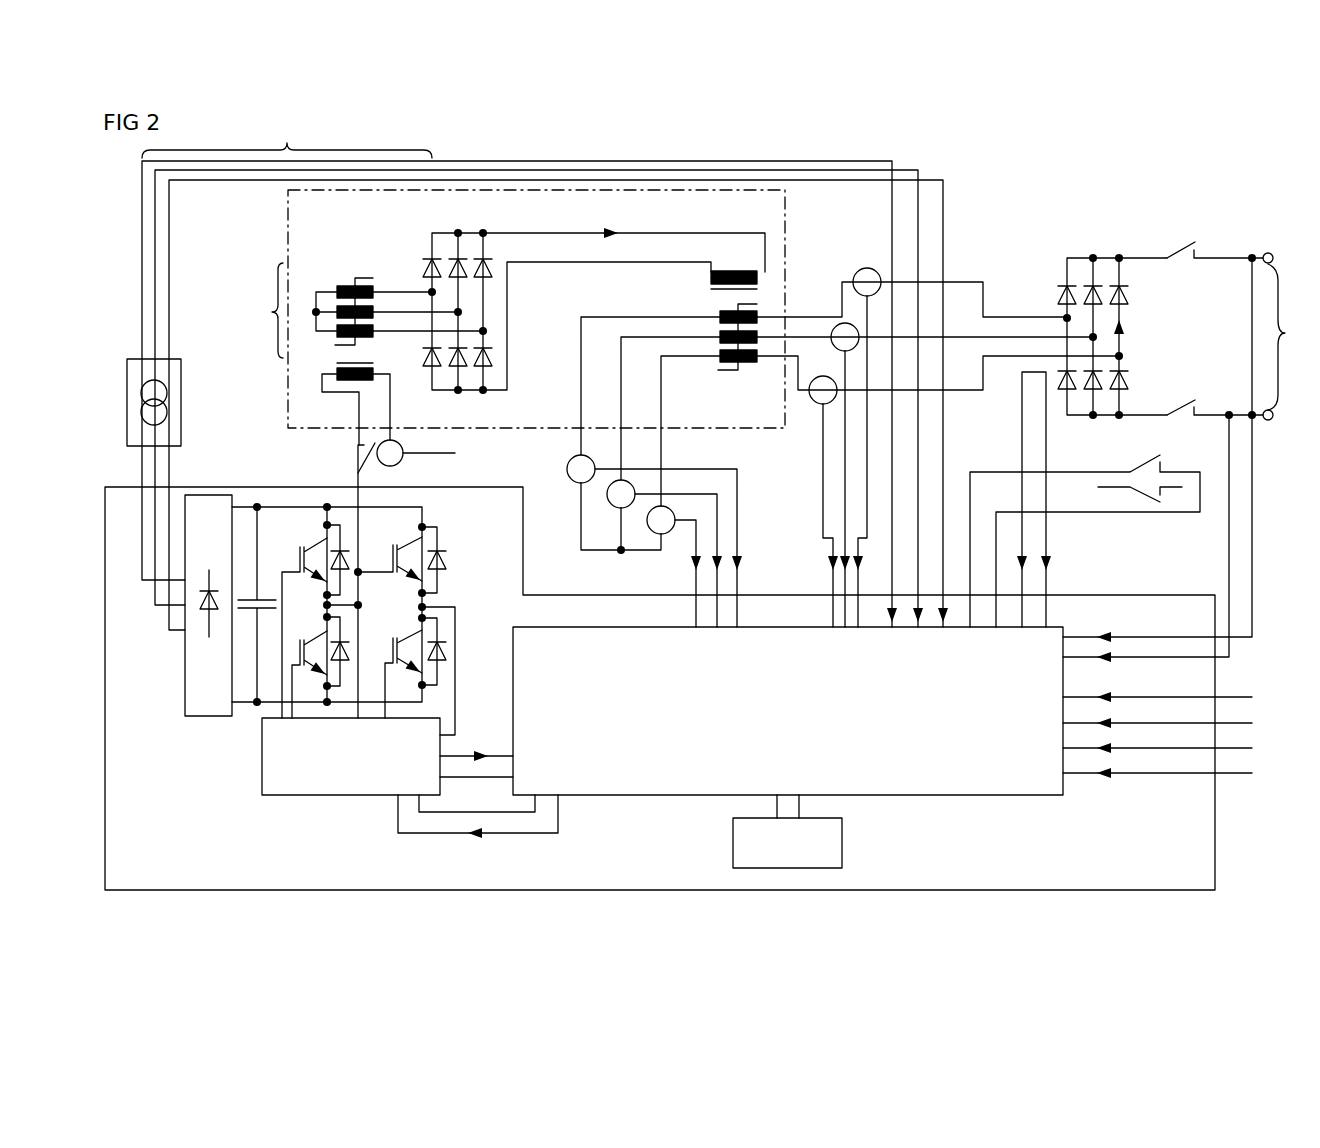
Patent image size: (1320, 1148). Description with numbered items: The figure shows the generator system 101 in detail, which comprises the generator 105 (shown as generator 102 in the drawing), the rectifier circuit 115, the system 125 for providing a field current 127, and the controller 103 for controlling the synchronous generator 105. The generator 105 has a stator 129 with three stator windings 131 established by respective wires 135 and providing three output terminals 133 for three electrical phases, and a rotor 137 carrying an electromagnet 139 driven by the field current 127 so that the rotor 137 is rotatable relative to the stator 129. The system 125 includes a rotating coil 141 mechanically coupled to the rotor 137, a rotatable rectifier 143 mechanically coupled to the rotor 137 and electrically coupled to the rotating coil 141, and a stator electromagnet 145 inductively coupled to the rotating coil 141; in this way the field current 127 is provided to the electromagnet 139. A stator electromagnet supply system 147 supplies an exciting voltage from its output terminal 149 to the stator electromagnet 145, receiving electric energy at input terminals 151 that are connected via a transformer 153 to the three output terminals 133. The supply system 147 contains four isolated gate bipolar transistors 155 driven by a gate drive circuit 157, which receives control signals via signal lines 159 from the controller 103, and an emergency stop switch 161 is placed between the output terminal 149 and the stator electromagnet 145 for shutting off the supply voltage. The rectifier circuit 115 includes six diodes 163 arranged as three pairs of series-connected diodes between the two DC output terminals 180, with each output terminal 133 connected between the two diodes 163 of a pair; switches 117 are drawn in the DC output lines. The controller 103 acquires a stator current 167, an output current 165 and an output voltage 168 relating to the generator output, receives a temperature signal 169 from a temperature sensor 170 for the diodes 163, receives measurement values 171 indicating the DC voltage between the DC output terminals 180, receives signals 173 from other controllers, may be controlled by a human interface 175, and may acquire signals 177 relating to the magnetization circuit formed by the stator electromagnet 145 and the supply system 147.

The generator system 101 is at (1203, 165).
The generator 102 is at (545, 488).
The controller 103 is at (930, 797).
The generator 105 is at (788, 218).
The rectifier circuit 115 is at (1122, 215).
The switch 117 is at (1178, 412).
The system for providing a field current 125 is at (542, 374).
The field current 127 is at (620, 240).
The stator 129 is at (676, 378).
The stator winding 131 is at (718, 354).
The output terminals 133 is at (790, 340).
The wires 135 is at (655, 402).
The rotor 137 is at (259, 310).
The electromagnet 139 is at (737, 268).
The rotating coil 141 is at (382, 268).
The rotatable rectifier 143 is at (530, 280).
The stator electromagnet 145 is at (410, 384).
The stator electromagnet supply system 147 is at (212, 765).
The output terminal 149 is at (355, 485).
The input terminals 151 is at (185, 640).
The transformer 153 is at (182, 404).
The isolated gate bipolar transistors 155 is at (298, 558).
The gate drive circuit 157 is at (330, 797).
The signal lines 159 is at (473, 838).
The emergency stop switch 161 is at (358, 455).
The diodes 163 is at (1119, 280).
The output current 165 is at (858, 575).
The stator current 167 is at (737, 575).
The output voltage 168 is at (895, 628).
The temperature signal 169 is at (1050, 574).
The temperature sensor 170 is at (1012, 400).
The measurement values 171 is at (1105, 655).
The signals 173 is at (1097, 776).
The human interface 175 is at (733, 842).
The signals 177 is at (1122, 318).
The DC output terminals 180 is at (1283, 336).